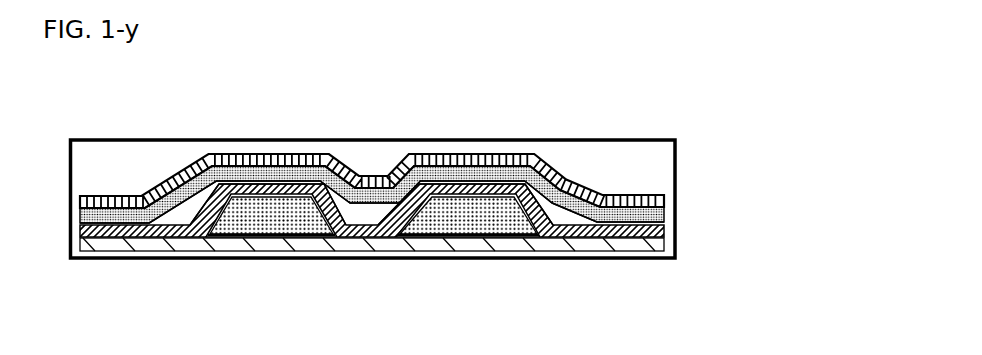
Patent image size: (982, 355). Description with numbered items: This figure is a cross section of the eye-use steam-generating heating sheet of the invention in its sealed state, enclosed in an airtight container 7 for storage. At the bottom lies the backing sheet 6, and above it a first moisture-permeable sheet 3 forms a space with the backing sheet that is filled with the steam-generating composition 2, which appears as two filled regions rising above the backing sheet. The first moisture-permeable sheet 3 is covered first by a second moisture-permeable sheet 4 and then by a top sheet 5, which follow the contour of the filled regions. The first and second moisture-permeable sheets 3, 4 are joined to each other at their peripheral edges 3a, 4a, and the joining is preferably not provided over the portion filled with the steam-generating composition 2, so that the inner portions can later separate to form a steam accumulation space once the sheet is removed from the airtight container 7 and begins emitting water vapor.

The steam-generating composition 2 is at (480, 224).
The first moisture-permeable sheet 3 is at (533, 190).
The peripheral edge of the first moisture-permeable sheet 3a is at (663, 227).
The second moisture-permeable sheet 4 is at (575, 197).
The peripheral edge of the second moisture-permeable sheet 4a is at (663, 212).
The top sheet 5 is at (641, 198).
The backing sheet 6 is at (525, 240).
The airtight container 7 is at (677, 176).